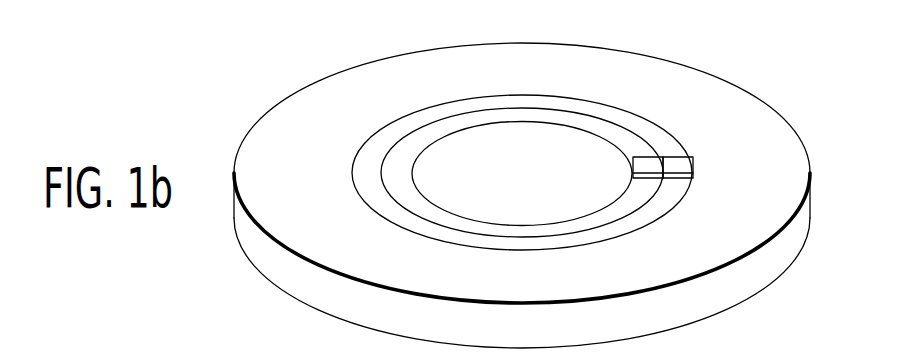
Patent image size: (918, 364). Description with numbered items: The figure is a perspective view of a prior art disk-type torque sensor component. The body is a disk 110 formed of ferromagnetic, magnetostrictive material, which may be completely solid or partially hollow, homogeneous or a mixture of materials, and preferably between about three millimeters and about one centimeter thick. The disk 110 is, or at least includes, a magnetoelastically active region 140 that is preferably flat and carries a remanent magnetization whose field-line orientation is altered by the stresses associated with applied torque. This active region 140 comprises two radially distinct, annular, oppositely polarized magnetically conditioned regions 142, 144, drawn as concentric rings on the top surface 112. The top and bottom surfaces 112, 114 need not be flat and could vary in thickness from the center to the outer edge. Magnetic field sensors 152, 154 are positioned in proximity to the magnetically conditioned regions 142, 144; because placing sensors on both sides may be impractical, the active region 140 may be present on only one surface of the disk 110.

The disk 110 is at (522, 202).
The top surface 112 is at (414, 266).
The bottom surface 114 is at (714, 341).
The magnetoelastically active region 140 is at (525, 133).
The magnetically conditioned region 142 is at (402, 150).
The magnetically conditioned region 144 is at (366, 185).
The magnetic field sensor 152 is at (639, 163).
The magnetic field sensor 154 is at (683, 167).